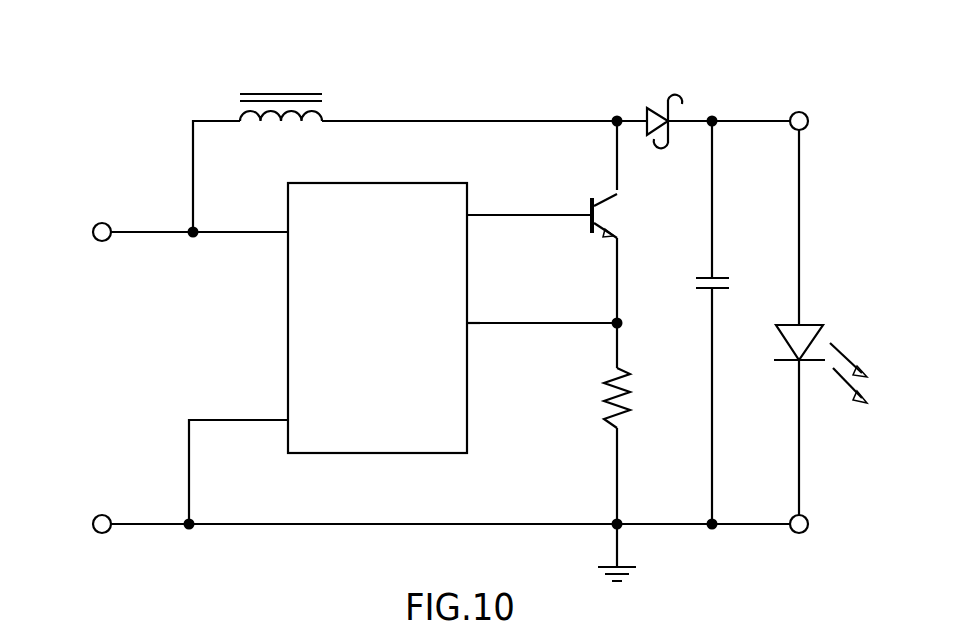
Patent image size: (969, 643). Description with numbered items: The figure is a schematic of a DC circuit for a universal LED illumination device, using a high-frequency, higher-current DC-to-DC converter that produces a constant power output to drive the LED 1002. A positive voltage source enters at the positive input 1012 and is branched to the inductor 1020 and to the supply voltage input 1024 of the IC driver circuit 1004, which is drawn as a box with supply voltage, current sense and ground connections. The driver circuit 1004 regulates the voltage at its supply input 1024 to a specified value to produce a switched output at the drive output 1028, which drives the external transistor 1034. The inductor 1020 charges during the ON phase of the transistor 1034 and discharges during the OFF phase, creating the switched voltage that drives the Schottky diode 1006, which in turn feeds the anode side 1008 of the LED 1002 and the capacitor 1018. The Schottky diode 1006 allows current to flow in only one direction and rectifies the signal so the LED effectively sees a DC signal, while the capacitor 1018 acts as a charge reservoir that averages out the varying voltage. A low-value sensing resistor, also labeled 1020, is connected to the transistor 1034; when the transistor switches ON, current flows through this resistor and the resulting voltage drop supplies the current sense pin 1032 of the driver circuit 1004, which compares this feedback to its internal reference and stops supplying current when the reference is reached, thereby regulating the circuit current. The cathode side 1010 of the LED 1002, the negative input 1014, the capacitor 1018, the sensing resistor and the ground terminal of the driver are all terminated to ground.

The LED 1002 is at (843, 342).
The IC driver circuit U1 1004 is at (288, 316).
The Schottky diode D1 1006 is at (644, 112).
The anode side 1008 is at (806, 115).
The cathode side 1010 is at (799, 534).
The +Vin 1012 is at (103, 222).
The -Vin 1014 is at (102, 515).
The capacitor C1 1018 is at (716, 275).
The inductor L1 1020 is at (260, 93).
The VCC input 1024 is at (287, 234).
The VDrive output 1028 is at (469, 217).
The current sense pin 1032 is at (467, 324).
The transistor Q1 1034 is at (604, 207).